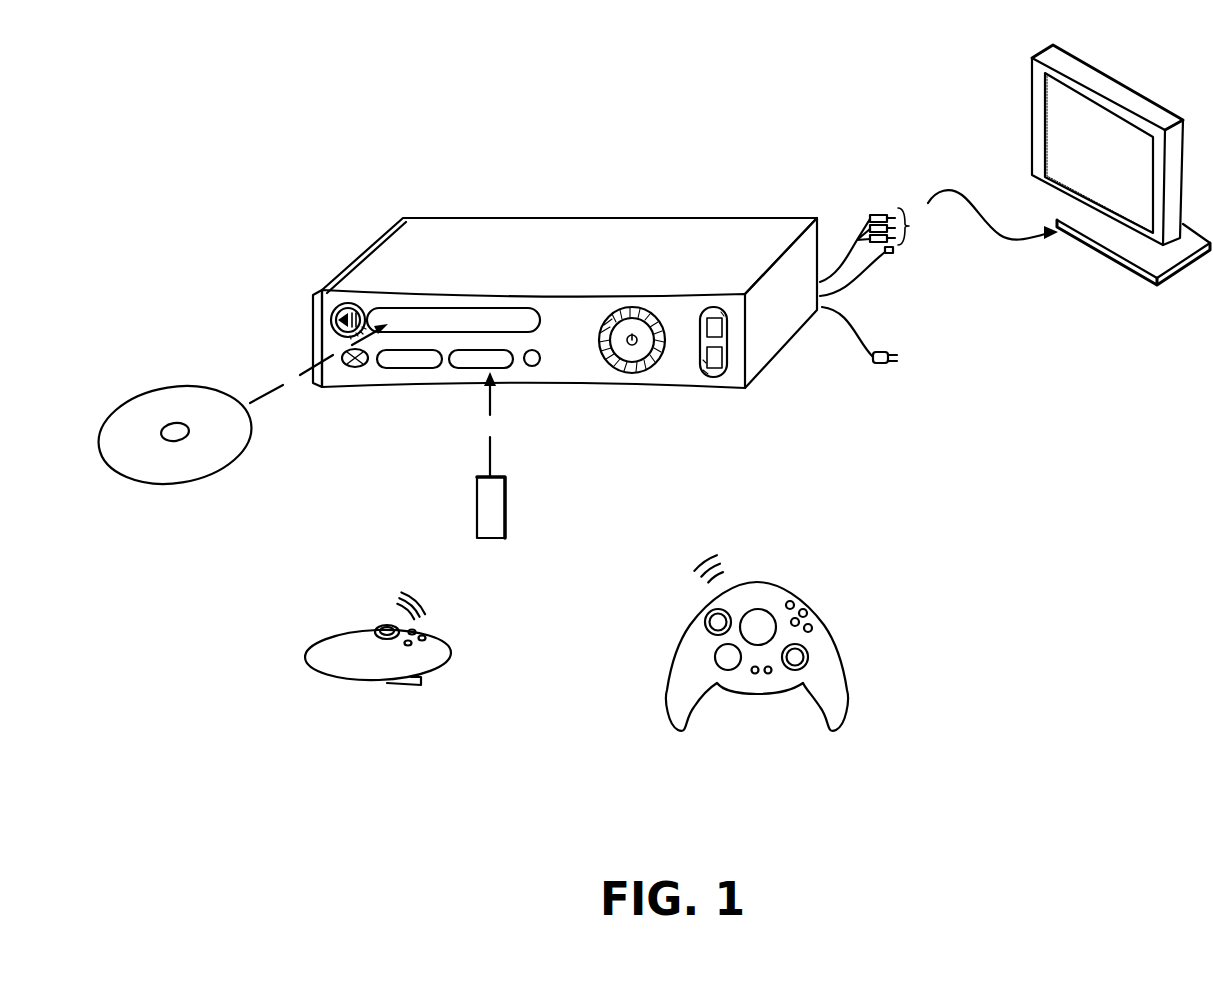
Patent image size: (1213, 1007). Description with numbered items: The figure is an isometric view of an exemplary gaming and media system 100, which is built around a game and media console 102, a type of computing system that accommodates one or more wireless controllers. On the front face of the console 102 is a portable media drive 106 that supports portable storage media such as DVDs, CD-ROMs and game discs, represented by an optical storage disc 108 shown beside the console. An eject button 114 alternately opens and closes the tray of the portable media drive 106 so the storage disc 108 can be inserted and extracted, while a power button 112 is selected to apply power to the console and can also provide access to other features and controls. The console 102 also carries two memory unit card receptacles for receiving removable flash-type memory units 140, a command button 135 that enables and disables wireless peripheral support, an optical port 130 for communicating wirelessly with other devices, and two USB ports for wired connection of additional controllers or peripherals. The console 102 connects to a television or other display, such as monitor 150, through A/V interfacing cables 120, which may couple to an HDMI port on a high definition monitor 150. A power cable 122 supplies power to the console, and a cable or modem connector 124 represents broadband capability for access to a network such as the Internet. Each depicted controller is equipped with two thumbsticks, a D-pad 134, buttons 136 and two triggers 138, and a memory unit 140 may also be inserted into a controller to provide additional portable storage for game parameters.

The gaming and media system 100 is at (603, 180).
The game and media console 102 is at (438, 227).
The portable media drive 106 is at (460, 308).
The optical storage disc 108 is at (185, 478).
The power button 112 is at (634, 373).
The eject button 114 is at (343, 323).
The A/V interfacing cables 120 is at (880, 213).
The power cable 122 is at (880, 364).
The cable or modem connector 124 is at (893, 255).
The optical port 130 is at (355, 368).
The D-pad 134 is at (714, 657).
The command button 135 is at (532, 366).
The buttons 136 is at (806, 613).
The trigger 138 is at (420, 690).
The memory unit 140 is at (492, 538).
The monitor 150 is at (1032, 120).